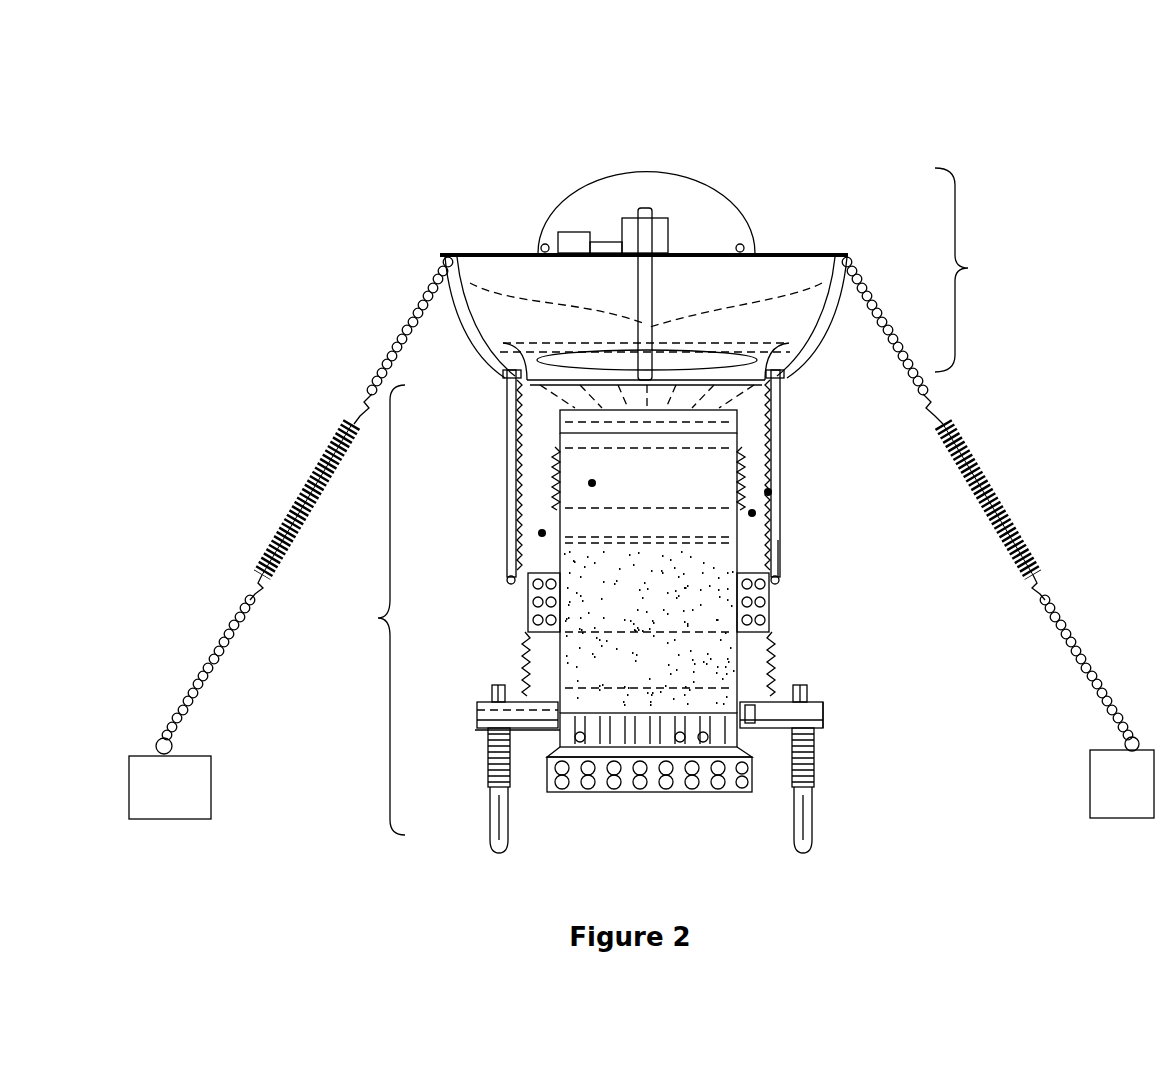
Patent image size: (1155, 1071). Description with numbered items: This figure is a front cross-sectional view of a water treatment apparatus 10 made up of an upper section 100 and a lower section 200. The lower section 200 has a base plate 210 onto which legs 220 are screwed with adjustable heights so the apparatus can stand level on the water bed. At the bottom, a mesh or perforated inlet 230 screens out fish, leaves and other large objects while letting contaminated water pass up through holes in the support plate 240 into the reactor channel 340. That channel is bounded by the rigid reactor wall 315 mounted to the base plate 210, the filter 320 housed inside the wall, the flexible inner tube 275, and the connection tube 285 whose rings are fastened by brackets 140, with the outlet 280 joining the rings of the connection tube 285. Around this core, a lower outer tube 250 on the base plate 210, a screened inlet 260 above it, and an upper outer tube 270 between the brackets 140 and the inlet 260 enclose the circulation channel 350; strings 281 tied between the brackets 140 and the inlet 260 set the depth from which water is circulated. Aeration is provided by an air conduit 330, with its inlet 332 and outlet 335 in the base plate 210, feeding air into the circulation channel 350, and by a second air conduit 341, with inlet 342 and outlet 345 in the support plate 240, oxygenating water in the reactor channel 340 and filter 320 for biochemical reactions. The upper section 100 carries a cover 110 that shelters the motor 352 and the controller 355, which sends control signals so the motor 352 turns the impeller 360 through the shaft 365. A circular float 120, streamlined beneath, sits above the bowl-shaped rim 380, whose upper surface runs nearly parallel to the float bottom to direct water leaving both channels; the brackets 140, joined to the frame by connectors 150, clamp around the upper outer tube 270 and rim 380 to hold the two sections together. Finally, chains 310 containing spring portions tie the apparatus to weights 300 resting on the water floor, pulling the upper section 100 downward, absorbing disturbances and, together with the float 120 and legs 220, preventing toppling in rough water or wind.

The water treatment apparatus 10 is at (1025, 144).
The upper section 100 is at (981, 270).
The cover 110 is at (703, 182).
The float 120 is at (644, 291).
The brackets 140 is at (500, 381).
The connectors 150 is at (472, 322).
The lower section 200 is at (366, 610).
The base plate 210 is at (825, 713).
The legs 220 is at (489, 833).
The inlet 230 is at (640, 794).
The support plate 240 is at (740, 742).
The lower outer tube 250 is at (781, 660).
The inlet 260 is at (527, 601).
The upper outer tube 270 is at (770, 491).
The flexible inner tube 275 is at (747, 468).
The outlet 280 is at (592, 427).
The strings 281 is at (783, 557).
The connection tube 285 is at (555, 448).
The weights 300 is at (641, 784).
The chains 310 is at (302, 497).
The reactor wall 315 is at (558, 657).
The filter 320 is at (649, 628).
The air conduit 330 is at (503, 715).
The inlet 332 is at (478, 719).
The outlet 335 is at (762, 708).
The reactor channel 340 is at (590, 484).
The air conduit 341 is at (563, 745).
The inlet 342 is at (557, 736).
The outlet 345 is at (704, 742).
The circulation channel 350 is at (540, 534).
The motor 352 is at (633, 235).
The controller 355 is at (572, 243).
The impeller 360 is at (578, 351).
The shaft 365 is at (540, 247).
The rim 380 is at (763, 350).